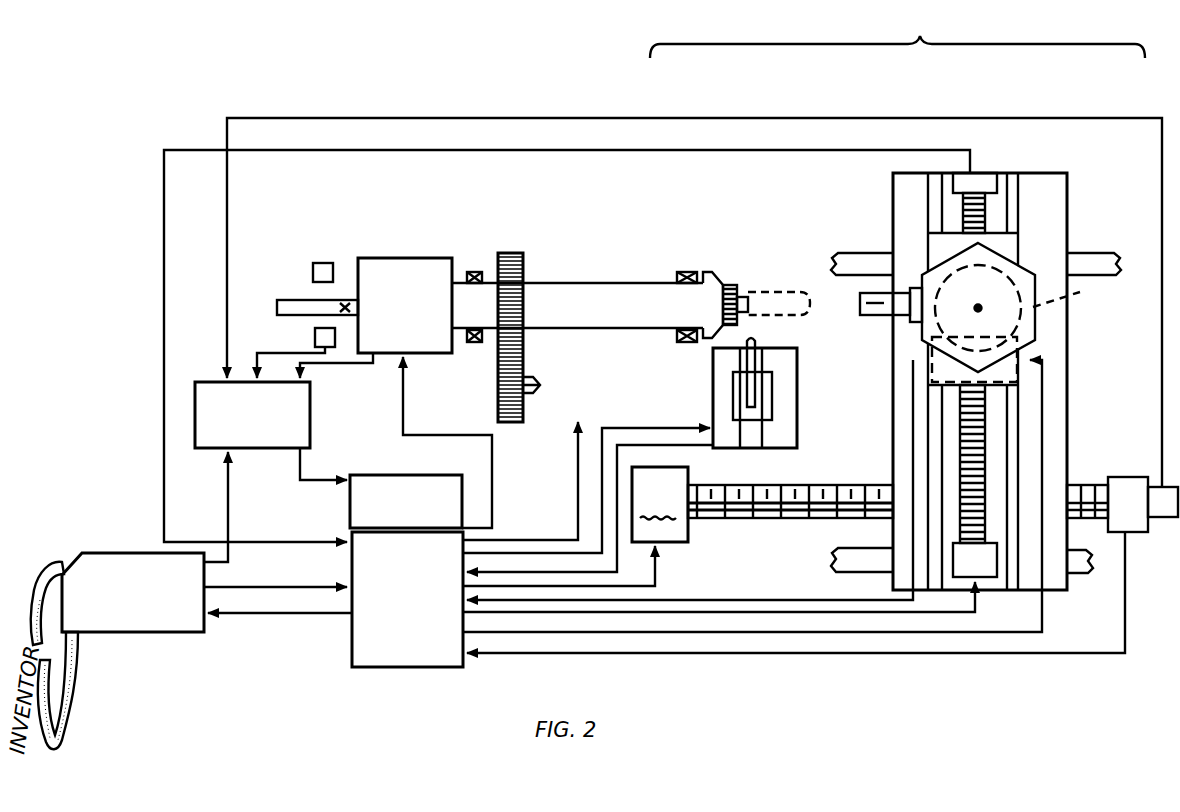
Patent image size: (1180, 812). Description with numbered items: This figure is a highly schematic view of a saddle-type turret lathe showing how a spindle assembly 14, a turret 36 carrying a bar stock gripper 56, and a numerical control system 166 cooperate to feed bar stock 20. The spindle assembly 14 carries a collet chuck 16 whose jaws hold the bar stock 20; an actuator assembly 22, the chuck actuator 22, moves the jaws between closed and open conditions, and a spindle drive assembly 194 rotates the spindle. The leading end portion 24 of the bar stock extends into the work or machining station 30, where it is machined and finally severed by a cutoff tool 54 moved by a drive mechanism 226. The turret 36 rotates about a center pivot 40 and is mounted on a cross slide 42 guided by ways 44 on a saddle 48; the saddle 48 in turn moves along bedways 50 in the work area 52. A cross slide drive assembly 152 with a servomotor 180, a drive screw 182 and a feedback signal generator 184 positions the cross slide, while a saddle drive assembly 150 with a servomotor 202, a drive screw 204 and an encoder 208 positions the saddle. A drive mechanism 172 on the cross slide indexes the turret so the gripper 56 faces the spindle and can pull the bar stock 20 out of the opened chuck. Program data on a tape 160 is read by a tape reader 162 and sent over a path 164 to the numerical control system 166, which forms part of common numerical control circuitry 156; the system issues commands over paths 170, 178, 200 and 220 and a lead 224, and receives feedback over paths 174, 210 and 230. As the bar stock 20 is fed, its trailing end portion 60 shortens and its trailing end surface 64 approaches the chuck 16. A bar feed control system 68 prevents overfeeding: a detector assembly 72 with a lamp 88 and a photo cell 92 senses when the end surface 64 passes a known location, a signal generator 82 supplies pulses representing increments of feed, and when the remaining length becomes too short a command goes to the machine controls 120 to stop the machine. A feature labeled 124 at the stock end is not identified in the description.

The spindle assembly 14 is at (615, 281).
The collet chuck 16 is at (720, 275).
The bar stock 20 is at (293, 298).
The actuator assembly 22 is at (438, 250).
The leading end portion 24 is at (740, 287).
The work or machining station 30 is at (786, 286).
The turret 36 is at (1042, 328).
The center pivot 40 is at (990, 302).
The cross slide 42 is at (1012, 252).
The ways or tracks 44 is at (930, 190).
The saddle or carriage 48 is at (1060, 398).
The bedways or tracks 50 is at (880, 262).
The work area 52 is at (897, 33).
The cutoff tool 54 is at (758, 372).
The bar stock gripper 56 is at (882, 312).
The trailing end portion 60 is at (277, 300).
The trailing end surface 64 is at (277, 308).
The bar feed control system 68 is at (193, 421).
The detector assembly 72 is at (363, 256).
The signal generator 82 is at (1160, 518).
The light source or lamp 88 is at (325, 263).
The photo cell 92 is at (315, 337).
The machine controls 120 is at (350, 530).
The stock end 124 is at (750, 312).
The saddle drive assembly 150 is at (808, 527).
The cross slide drive assembly 152 is at (990, 522).
The numerical control circuitry 156 is at (378, 670).
The tape 160 is at (60, 560).
The tape reader 162 is at (125, 556).
The path 164 is at (296, 588).
The numerical control system 166 is at (430, 668).
The path 170 is at (1028, 635).
The drive mechanism 172 is at (1078, 293).
The path 174 is at (884, 592).
The path 178 is at (822, 620).
The servomotor 180 is at (992, 578).
The drive screw 182 is at (962, 440).
The signal generator 184 is at (975, 186).
The spindle drive assembly 194 is at (566, 420).
The path or connection 200 is at (657, 556).
The servomotor 202 is at (660, 504).
The drive screw 204 is at (866, 485).
The encoder or signal generator 208 is at (1124, 484).
The path or connection 210 is at (1128, 607).
The path 220 is at (492, 468).
The lead 224 is at (700, 428).
The drive mechanism 226 is at (733, 374).
The path 230 is at (715, 450).